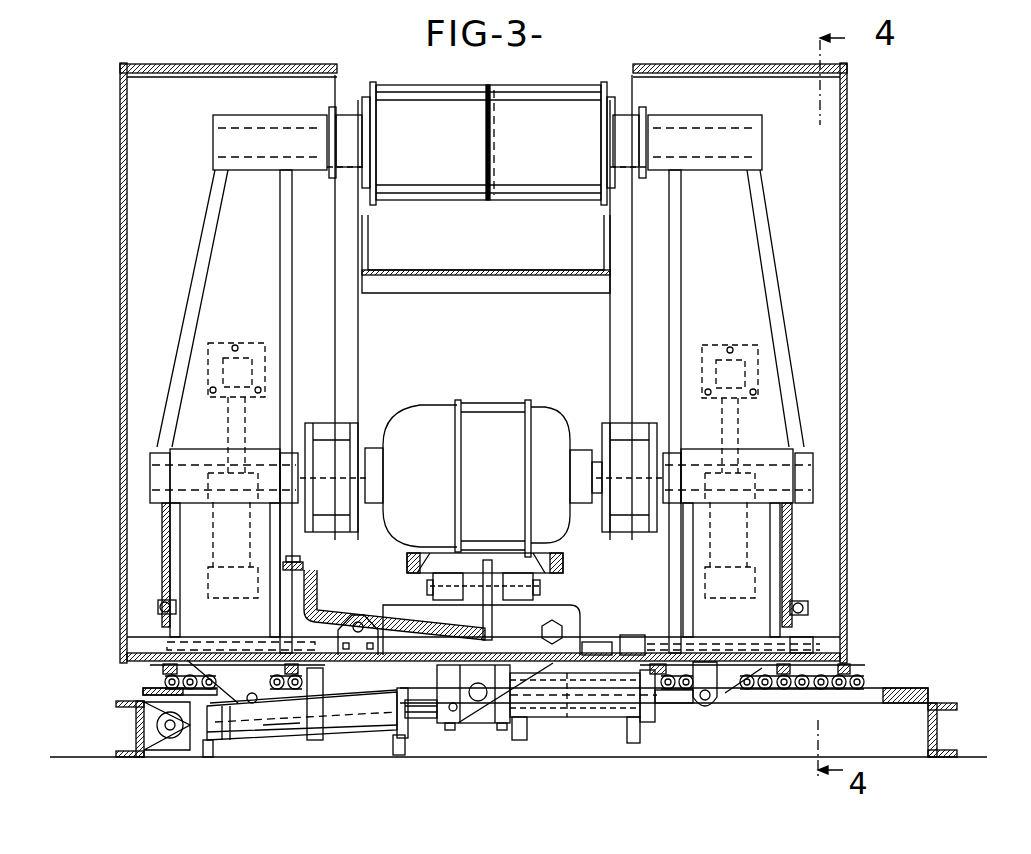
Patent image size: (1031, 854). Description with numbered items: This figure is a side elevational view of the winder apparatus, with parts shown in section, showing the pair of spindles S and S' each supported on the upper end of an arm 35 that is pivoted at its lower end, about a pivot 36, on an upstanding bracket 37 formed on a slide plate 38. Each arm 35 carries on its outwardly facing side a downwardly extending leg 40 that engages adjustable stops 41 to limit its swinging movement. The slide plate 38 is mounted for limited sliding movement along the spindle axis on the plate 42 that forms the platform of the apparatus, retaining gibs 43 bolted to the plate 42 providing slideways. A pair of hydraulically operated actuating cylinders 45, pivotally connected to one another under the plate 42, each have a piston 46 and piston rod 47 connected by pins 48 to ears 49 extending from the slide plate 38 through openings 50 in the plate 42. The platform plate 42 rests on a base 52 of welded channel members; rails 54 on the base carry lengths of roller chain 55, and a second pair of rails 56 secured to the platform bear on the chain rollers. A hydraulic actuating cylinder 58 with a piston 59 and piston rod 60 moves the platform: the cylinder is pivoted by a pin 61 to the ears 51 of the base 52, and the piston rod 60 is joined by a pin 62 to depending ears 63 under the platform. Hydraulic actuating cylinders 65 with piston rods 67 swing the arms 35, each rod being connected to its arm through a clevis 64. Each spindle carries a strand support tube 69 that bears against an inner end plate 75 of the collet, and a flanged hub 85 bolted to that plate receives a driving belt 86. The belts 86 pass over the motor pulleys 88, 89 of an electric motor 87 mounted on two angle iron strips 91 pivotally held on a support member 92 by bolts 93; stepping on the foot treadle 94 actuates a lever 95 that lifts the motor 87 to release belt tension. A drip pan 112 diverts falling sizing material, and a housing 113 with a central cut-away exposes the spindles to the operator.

The arm 35 is at (201, 234).
The pivot 36 is at (254, 458).
The upstanding bracket 37 is at (188, 557).
The slide plate 38 is at (238, 637).
The downwardly extending leg 40 is at (162, 572).
The adjustable stops 41 is at (158, 606).
The plate 42 is at (798, 664).
The retaining gibs 43 is at (812, 645).
The actuating cylinders 45 is at (512, 740).
The piston 46 is at (548, 712).
The piston rod 47 is at (668, 703).
The pins 48 is at (707, 701).
The ears 49 is at (238, 703).
The openings 50 is at (318, 640).
The ears 51 is at (144, 735).
The base 52 is at (138, 718).
The rails 54 is at (145, 692).
The roller chain 55 is at (165, 682).
The second pair of rails 56 is at (163, 667).
The hydraulic actuating cylinder 58 is at (340, 735).
The piston 59 is at (260, 728).
The piston rod 60 is at (420, 720).
The pin 61 is at (170, 738).
The pin 62 is at (455, 722).
The depending ears 63 is at (495, 726).
The clevis 64 is at (262, 328).
The hydraulic actuating cylinders 65 is at (226, 532).
The piston rod 67 is at (228, 414).
The strand support tube 69 is at (487, 200).
The inner end plate 75 is at (378, 86).
The flanged hub 85 is at (330, 110).
The driving belt 86 is at (353, 345).
The electric motor 87 is at (480, 405).
The pulleys 88 is at (316, 430).
The pulley 89 is at (642, 428).
The angle iron strips 91 is at (434, 572).
The support member 92 is at (577, 617).
The bolts 93 is at (430, 588).
The foot treadle 94 is at (290, 562).
The lever 95 is at (314, 584).
The drip pan 112 is at (472, 275).
The housing 113 is at (849, 270).
The housing wall W is at (856, 97).
The spindle S is at (363, 62).
The spindle S' is at (605, 62).